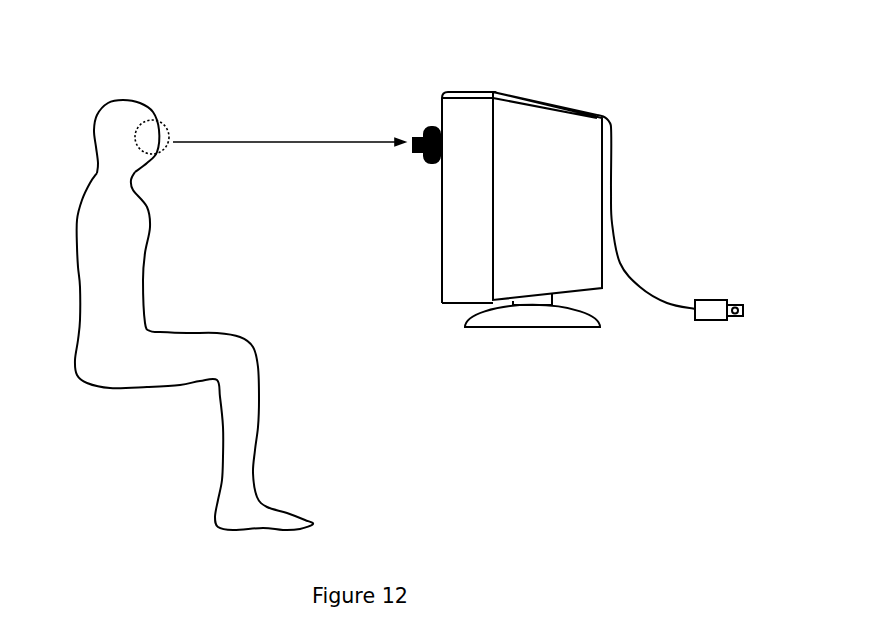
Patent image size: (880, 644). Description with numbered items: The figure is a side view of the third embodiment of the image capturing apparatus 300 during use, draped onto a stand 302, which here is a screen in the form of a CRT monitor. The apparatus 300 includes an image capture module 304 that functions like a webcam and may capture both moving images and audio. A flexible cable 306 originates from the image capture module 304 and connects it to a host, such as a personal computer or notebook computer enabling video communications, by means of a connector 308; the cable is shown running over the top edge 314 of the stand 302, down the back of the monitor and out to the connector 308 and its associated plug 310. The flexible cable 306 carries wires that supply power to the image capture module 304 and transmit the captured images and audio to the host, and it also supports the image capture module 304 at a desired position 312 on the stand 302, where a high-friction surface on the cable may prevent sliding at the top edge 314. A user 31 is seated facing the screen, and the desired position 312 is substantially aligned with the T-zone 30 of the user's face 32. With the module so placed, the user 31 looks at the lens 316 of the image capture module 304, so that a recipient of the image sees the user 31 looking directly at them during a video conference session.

The T-zone 30 is at (166, 129).
The user 31 is at (117, 263).
The user's face 32 is at (113, 147).
The image capturing apparatus 300 is at (689, 250).
The stand 302 is at (455, 277).
The image capture module 304 is at (363, 135).
The flexible cable 306 is at (612, 185).
The connector 308 is at (733, 316).
The plug 310 is at (715, 312).
The desired position 312 is at (430, 127).
The top edge 314 is at (493, 97).
The lens 316 is at (413, 147).